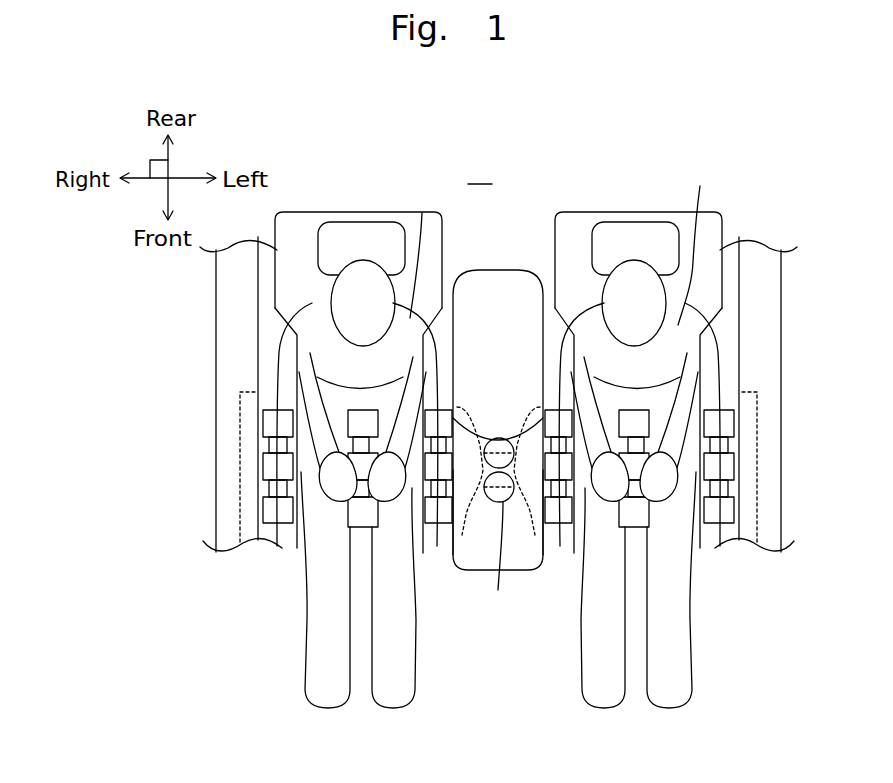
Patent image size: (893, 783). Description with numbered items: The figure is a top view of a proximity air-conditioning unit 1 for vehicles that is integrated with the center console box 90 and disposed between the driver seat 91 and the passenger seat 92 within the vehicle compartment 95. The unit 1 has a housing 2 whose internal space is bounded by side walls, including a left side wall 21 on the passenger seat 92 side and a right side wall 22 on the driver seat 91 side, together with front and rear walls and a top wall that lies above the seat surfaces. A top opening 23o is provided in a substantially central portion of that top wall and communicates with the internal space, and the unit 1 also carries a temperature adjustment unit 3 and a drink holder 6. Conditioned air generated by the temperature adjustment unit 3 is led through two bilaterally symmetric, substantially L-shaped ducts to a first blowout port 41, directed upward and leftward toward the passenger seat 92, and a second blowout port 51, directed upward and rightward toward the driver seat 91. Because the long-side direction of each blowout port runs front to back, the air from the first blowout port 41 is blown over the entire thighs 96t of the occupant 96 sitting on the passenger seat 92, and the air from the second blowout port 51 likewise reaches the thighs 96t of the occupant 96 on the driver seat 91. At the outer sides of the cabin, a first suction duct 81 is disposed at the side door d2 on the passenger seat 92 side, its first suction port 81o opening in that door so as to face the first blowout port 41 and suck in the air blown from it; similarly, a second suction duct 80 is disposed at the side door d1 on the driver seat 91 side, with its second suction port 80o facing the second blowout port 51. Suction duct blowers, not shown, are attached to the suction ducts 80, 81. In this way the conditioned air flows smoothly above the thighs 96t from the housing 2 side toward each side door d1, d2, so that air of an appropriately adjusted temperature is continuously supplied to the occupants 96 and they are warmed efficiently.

The proximity air-conditioning unit for vehicles 1 is at (487, 445).
The housing 2 is at (487, 442).
The temperature adjustment unit 3 is at (509, 440).
The drink holder 6 is at (492, 440).
The left side wall 21 is at (548, 572).
The right side wall 22 is at (447, 540).
The top opening 23o is at (514, 557).
The first blowout port 41 is at (547, 470).
The second blowout port 51 is at (455, 470).
The second suction duct 80 is at (248, 424).
The second suction port 80o is at (272, 405).
The first suction duct 81 is at (757, 440).
The first suction port 81o is at (732, 405).
The center console box 90 is at (505, 268).
The driver seat 91 is at (307, 206).
The passenger seat 92 is at (628, 208).
The vehicle compartment 95 is at (480, 173).
The occupant 96 is at (564, 245).
The thighs 96t is at (308, 481).
The side door on the driver seat side d1 is at (222, 298).
The side door on the passenger seat side d2 is at (775, 280).